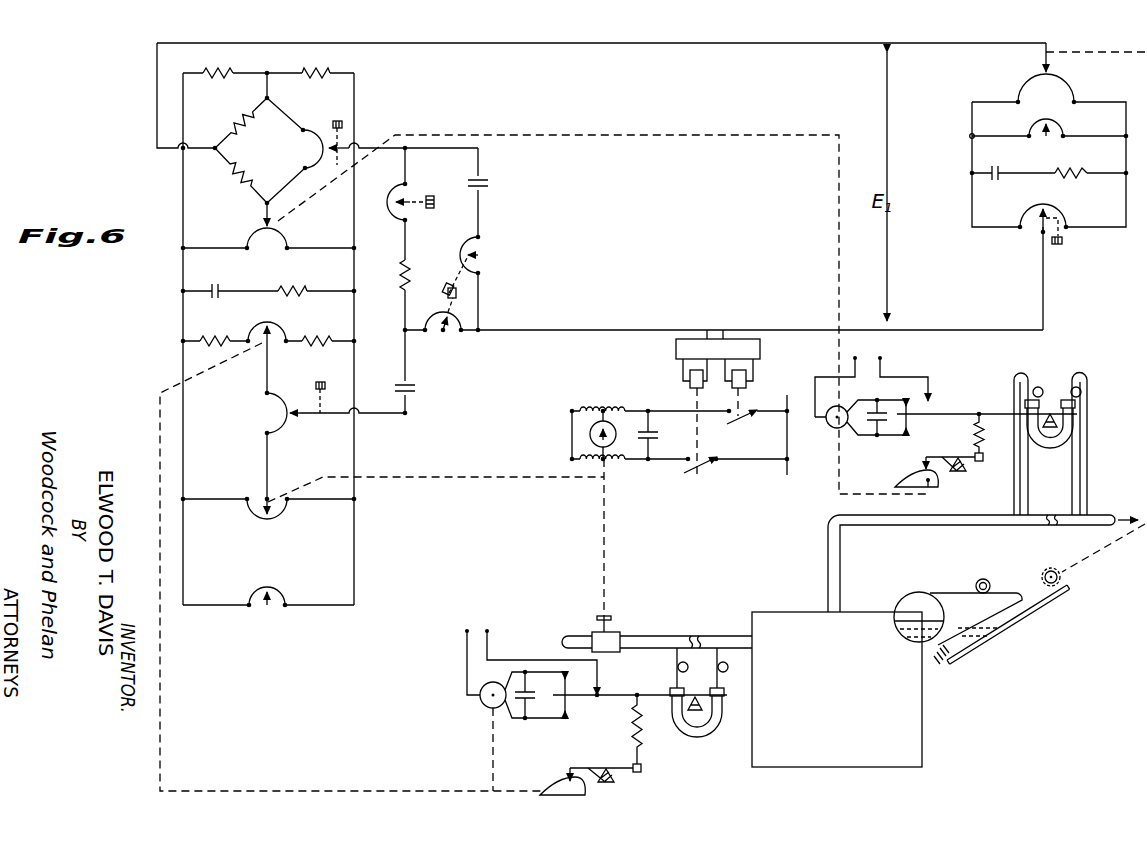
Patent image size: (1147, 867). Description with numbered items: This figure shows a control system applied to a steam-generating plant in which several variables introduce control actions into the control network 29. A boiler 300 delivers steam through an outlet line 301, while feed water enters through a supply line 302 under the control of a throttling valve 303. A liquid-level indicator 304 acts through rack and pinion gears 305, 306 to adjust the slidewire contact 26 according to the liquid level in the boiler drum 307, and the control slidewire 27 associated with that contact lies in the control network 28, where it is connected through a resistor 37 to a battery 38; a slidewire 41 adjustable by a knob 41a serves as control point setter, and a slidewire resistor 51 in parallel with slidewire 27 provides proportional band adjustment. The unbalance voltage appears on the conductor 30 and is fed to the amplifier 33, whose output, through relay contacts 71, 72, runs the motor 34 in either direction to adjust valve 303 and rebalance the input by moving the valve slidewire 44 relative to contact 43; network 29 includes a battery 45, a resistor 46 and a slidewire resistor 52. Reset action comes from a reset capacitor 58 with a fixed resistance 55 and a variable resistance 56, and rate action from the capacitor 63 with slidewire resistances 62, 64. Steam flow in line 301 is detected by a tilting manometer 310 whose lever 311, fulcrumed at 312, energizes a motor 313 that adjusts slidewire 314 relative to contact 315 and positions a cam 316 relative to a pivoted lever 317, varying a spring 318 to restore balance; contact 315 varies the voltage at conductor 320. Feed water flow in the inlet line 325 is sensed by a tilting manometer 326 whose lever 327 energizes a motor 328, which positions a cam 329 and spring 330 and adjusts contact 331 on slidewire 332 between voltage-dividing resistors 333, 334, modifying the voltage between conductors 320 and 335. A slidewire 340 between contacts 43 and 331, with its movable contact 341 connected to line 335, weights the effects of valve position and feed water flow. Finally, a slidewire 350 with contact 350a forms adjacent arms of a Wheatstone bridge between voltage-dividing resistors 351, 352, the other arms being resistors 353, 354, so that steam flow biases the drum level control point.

The slidewire contact 26 is at (1044, 61).
The control slidewire 27 is at (1022, 86).
The control network 28 is at (930, 172).
The control network 29 is at (116, 345).
The conductor 30 is at (276, 43).
The amplifier 33 is at (760, 352).
The motor 34 is at (590, 434).
The resistor 37 is at (1078, 170).
The battery 38 is at (998, 170).
The slidewire 41 is at (1065, 215).
The knob 41a is at (1062, 245).
The contact 43 is at (262, 497).
The slidewire 44 is at (282, 516).
The battery 45 is at (218, 288).
The resistor 46 is at (300, 288).
The slidewire resistor 51 is at (1043, 118).
The slidewire resistor 52 is at (283, 592).
The fixed resistance 55 is at (398, 276).
The variable resistance 56 is at (395, 216).
The reset capacitor 58 is at (418, 392).
The slidewire resistance 62 is at (430, 316).
The capacitor 63 is at (487, 184).
The slidewire resistance 64 is at (470, 240).
The relay contact 71 is at (698, 474).
The relay contact 72 is at (736, 419).
The boiler 300 is at (912, 732).
The outlet line 301 is at (1092, 515).
The supply line 302 is at (578, 636).
The throttling valve 303 is at (614, 637).
The liquid-level indicator 304 is at (985, 632).
The rack 305 is at (1058, 594).
The pinion gear 306 is at (1052, 568).
The boiler drum 307 is at (916, 598).
The tilting manometer 310 is at (1058, 448).
The lever 311 is at (947, 412).
The fulcrum 312 is at (1050, 412).
The motor 313 is at (829, 432).
The slidewire 314 is at (287, 240).
The contact 315 is at (263, 213).
The cam 316 is at (905, 478).
The pivoted lever 317 is at (941, 463).
The spring 318 is at (975, 441).
The conductor 320 is at (365, 138).
The inlet line 325 is at (733, 640).
The tilting manometer 326 is at (700, 740).
The lever 327 is at (612, 693).
The motor 328 is at (480, 705).
The cam 329 is at (558, 785).
The spring 330 is at (632, 744).
The contact 331 is at (272, 345).
The slidewire 332 is at (283, 334).
The voltage-dividing resistor 333 is at (208, 336).
The voltage-dividing resistor 334 is at (325, 340).
The conductor 335 is at (390, 418).
The slidewire 340 is at (266, 405).
The movable contact 341 is at (302, 420).
The slidewire 350 is at (305, 128).
The contact 350a is at (338, 164).
The voltage-dividing resistor 351 is at (203, 62).
The voltage-dividing resistor 352 is at (322, 61).
The resistor 353 is at (231, 122).
The resistor 354 is at (232, 181).